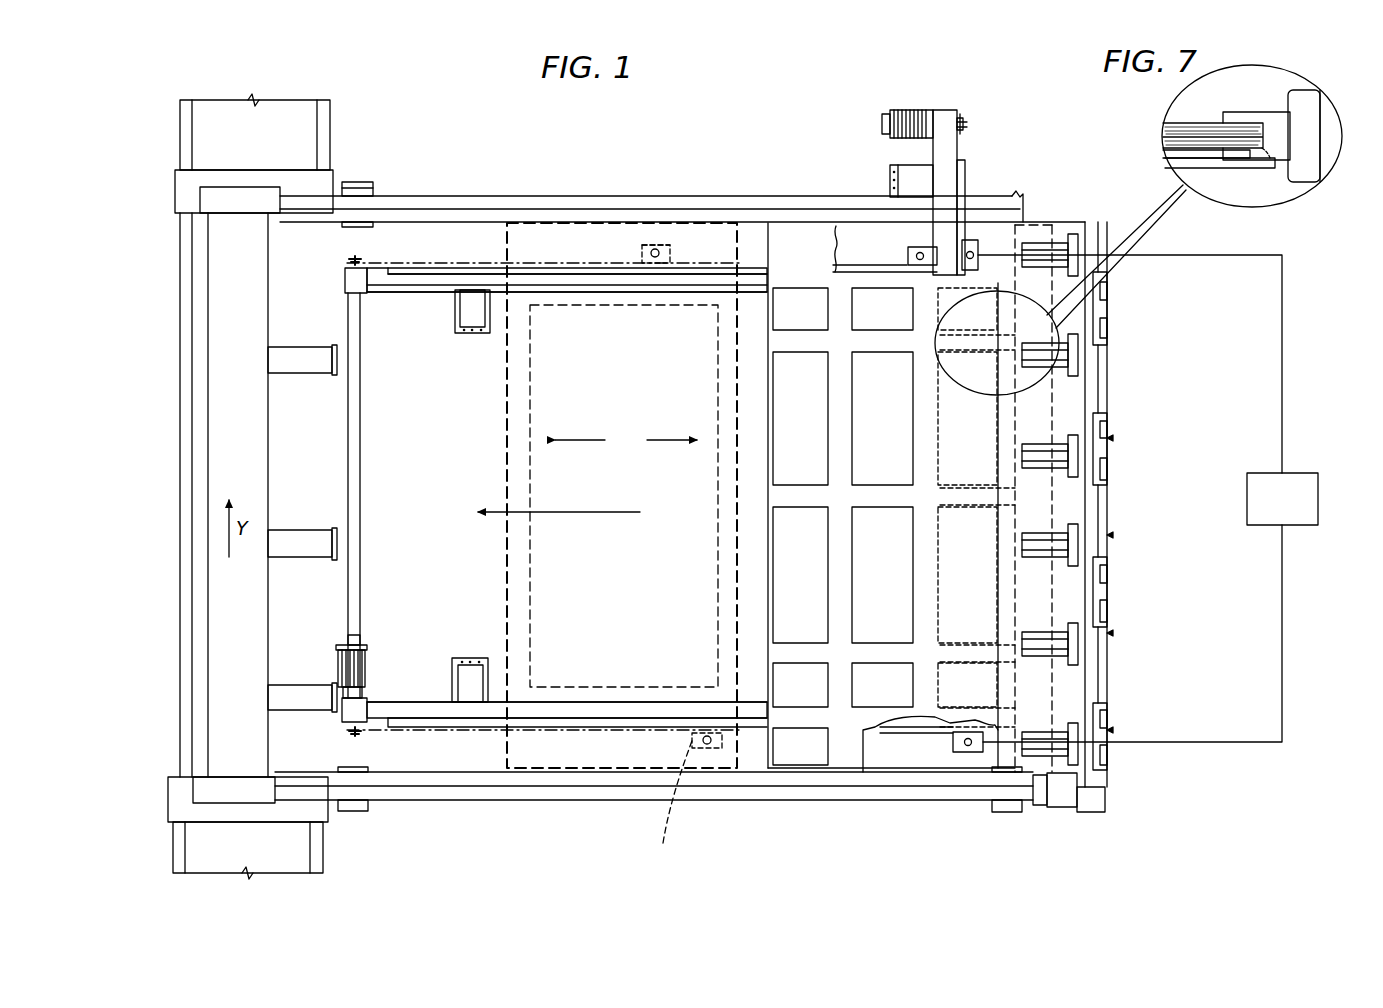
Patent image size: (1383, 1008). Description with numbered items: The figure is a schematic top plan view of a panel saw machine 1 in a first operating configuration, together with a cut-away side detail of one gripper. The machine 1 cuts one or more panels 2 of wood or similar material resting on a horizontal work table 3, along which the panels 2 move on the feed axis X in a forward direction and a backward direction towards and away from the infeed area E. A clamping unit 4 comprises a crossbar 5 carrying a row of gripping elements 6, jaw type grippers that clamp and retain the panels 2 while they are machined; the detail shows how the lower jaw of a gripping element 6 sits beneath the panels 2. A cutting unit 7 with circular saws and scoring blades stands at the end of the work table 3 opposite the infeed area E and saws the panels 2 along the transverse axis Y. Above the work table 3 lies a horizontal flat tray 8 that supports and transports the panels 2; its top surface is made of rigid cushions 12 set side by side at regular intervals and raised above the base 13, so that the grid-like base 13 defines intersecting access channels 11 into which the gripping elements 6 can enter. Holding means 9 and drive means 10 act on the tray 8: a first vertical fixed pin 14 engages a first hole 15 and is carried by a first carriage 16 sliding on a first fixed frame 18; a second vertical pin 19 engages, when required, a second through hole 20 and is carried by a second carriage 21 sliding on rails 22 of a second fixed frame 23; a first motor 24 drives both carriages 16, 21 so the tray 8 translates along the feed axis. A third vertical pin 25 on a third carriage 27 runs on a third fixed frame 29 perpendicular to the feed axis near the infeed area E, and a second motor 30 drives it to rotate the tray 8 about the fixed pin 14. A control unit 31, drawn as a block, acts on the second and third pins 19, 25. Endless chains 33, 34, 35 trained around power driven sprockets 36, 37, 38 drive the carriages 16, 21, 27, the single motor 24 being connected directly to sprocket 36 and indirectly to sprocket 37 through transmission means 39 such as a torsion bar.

In FIG. 1, the panel saw machine 1 is at (165, 243).
In FIG. 1, the panel 2 is at (582, 690).
In FIG. 7, the panel 2 is at (1198, 140).
In FIG. 1, the horizontal work table 3 is at (408, 316).
In FIG. 1, the clamping unit 4 is at (1058, 503).
In FIG. 1, the crossbar 5 is at (1058, 395).
In FIG. 7, the crossbar 5 is at (1305, 120).
In FIG. 1, the gripping element 6 is at (1000, 490).
In FIG. 7, the gripping element 6 is at (1262, 118).
In FIG. 1, the cutting unit 7 is at (233, 702).
In FIG. 1, the tray 8 is at (505, 340).
In FIG. 1, the means for selectively holding the tray 9 is at (648, 240).
In FIG. 1, the means for driving the tray 10 is at (906, 88).
In FIG. 1, the access channel 11 is at (785, 343).
In FIG. 7, the access channel 11 is at (1200, 162).
In FIG. 1, the rigid cushion 12 is at (894, 526).
In FIG. 7, the rigid cushion 12 is at (1200, 154).
In FIG. 7, the base of the tray 13 is at (1250, 166).
In FIG. 1, the first vertical fixed pin 14 is at (963, 747).
In FIG. 1, the first hole 15 is at (713, 750).
In FIG. 1, the first carriage 16 is at (663, 733).
In FIG. 1, the first fixed frame 18 is at (610, 712).
In FIG. 1, the second vertical pin 19 is at (667, 253).
In FIG. 1, the second through hole 20 is at (672, 256).
In FIG. 1, the second carriage 21 is at (600, 266).
In FIG. 1, the rails 22 is at (581, 273).
In FIG. 1, the second fixed frame 23 is at (430, 284).
In FIG. 1, the first motor 24 is at (345, 672).
In FIG. 1, the third vertical pin 25 is at (965, 262).
In FIG. 1, the third carriage 27 is at (965, 204).
In FIG. 1, the third fixed frame 29 is at (940, 163).
In FIG. 1, the second motor 30 is at (897, 116).
In FIG. 1, the control unit 31 is at (1148, 498).
In FIG. 1, the endless chain 33 is at (462, 732).
In FIG. 1, the endless chain 34 is at (465, 264).
In FIG. 1, the endless chain 35 is at (967, 142).
In FIG. 1, the sprocket 36 is at (355, 734).
In FIG. 1, the sprocket 37 is at (358, 262).
In FIG. 1, the sprocket 38 is at (966, 122).
In FIG. 1, the transmission means 39 is at (352, 422).
In FIG. 1, the infeed area E is at (990, 764).